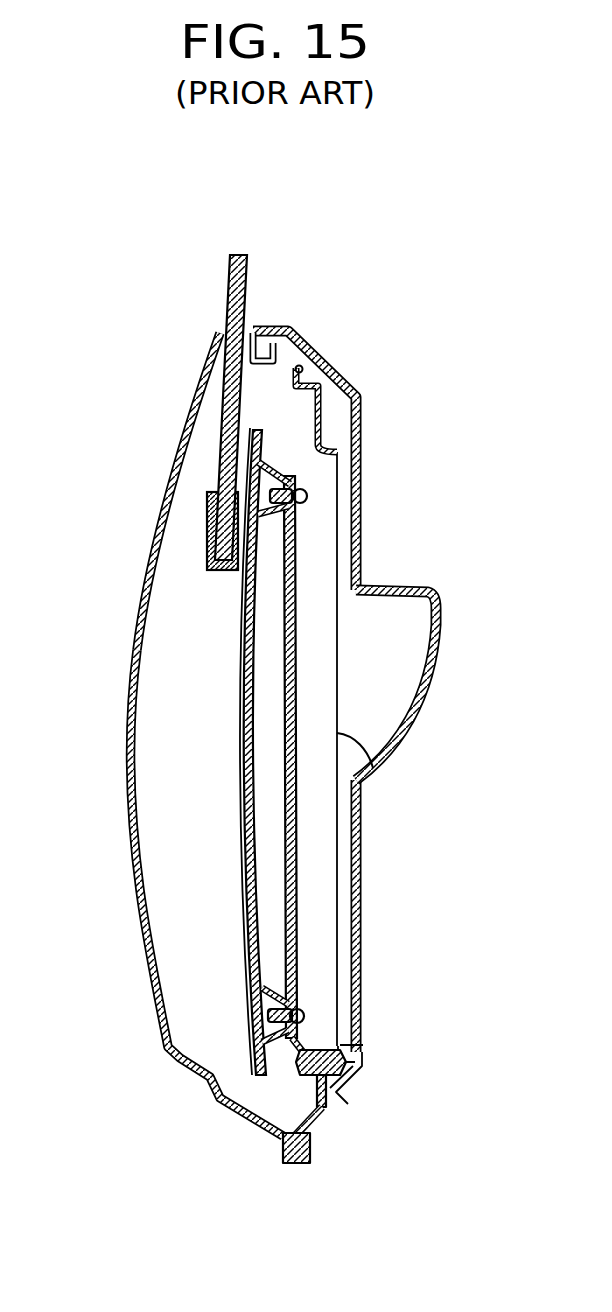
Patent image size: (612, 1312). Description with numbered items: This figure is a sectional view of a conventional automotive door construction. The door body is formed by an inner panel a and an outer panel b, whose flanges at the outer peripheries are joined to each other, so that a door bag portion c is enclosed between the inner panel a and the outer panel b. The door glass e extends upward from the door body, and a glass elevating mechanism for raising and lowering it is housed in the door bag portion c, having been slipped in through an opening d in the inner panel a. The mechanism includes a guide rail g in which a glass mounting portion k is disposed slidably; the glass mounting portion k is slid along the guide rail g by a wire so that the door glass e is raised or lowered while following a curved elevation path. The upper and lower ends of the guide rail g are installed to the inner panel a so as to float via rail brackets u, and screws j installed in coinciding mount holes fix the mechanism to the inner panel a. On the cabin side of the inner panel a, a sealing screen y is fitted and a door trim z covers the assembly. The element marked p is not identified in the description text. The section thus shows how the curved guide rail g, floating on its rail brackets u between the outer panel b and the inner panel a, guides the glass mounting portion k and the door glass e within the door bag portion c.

The door glass e is at (247, 287).
The clip p is at (232, 340).
The rail bracket u is at (268, 476).
The screw j is at (306, 494).
The glass mounting portion k is at (213, 505).
The opening d is at (296, 568).
The outer panel b is at (143, 604).
The guide rail g is at (243, 712).
The door trim z is at (425, 697).
The sealing screen y is at (373, 768).
The door bag portion c is at (192, 983).
The inner panel a is at (338, 1115).